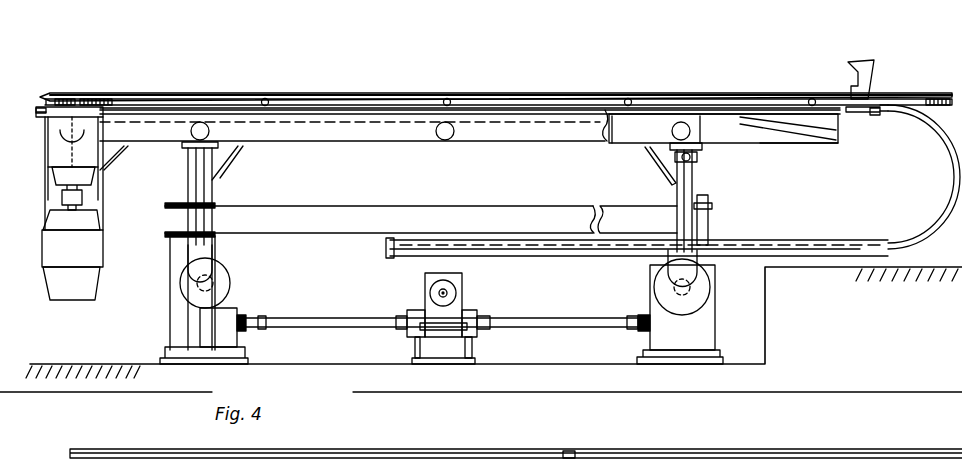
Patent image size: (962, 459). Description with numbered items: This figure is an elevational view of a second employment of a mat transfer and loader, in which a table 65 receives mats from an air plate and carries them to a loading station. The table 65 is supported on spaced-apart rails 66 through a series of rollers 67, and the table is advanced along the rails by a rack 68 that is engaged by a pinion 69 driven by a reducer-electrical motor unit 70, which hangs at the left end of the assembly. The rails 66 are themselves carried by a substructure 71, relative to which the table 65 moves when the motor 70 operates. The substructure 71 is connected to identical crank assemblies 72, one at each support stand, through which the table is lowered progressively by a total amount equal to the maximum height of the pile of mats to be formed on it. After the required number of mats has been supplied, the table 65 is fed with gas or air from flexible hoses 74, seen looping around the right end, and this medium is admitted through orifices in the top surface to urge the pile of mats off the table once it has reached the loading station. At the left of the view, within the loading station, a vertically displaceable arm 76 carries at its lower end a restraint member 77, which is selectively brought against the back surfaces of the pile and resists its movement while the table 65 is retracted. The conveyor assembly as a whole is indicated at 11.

The conveyor 11 is at (436, 82).
The table 65 is at (209, 88).
The spaced-apart rails 66 is at (333, 116).
The rollers 67 is at (270, 98).
The rack 68 is at (124, 104).
The pinion 69 is at (80, 98).
The reducer-electrical motor unit 70 is at (45, 255).
The substructure 71 is at (446, 220).
The crank assemblies 72 is at (228, 284).
The flexible hoses 74 is at (950, 182).
The vertically displaceable arm 76 is at (9, 70).
The restraint member 77 is at (5, 130).